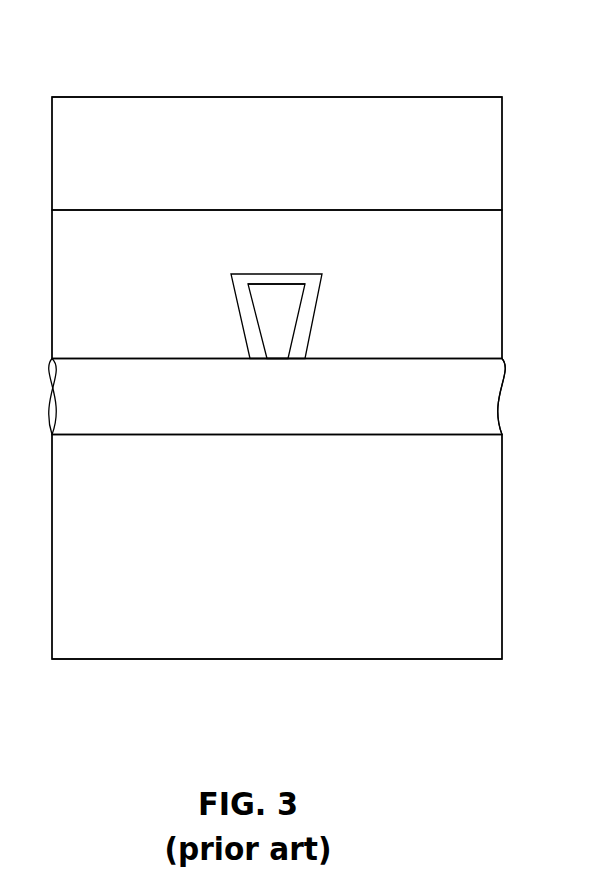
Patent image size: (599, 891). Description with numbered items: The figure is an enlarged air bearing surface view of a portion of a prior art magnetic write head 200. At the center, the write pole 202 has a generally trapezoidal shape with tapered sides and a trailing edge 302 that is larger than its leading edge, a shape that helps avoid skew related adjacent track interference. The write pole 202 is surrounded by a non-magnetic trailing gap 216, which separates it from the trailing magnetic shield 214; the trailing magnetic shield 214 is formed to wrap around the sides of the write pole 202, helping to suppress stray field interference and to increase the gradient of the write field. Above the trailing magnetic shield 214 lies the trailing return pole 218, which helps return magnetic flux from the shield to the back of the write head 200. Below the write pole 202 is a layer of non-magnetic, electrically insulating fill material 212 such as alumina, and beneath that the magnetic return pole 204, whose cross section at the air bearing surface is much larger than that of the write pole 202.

The magnetic write head 200 is at (246, 92).
The trailing return pole 218 is at (345, 153).
The trailing magnetic shield 214 is at (283, 239).
The non-magnetic trailing gap 216 is at (278, 278).
The trailing edge 302 is at (267, 284).
The write pole 202 is at (277, 315).
The fill material 212 is at (317, 397).
The magnetic return pole 204 is at (325, 527).